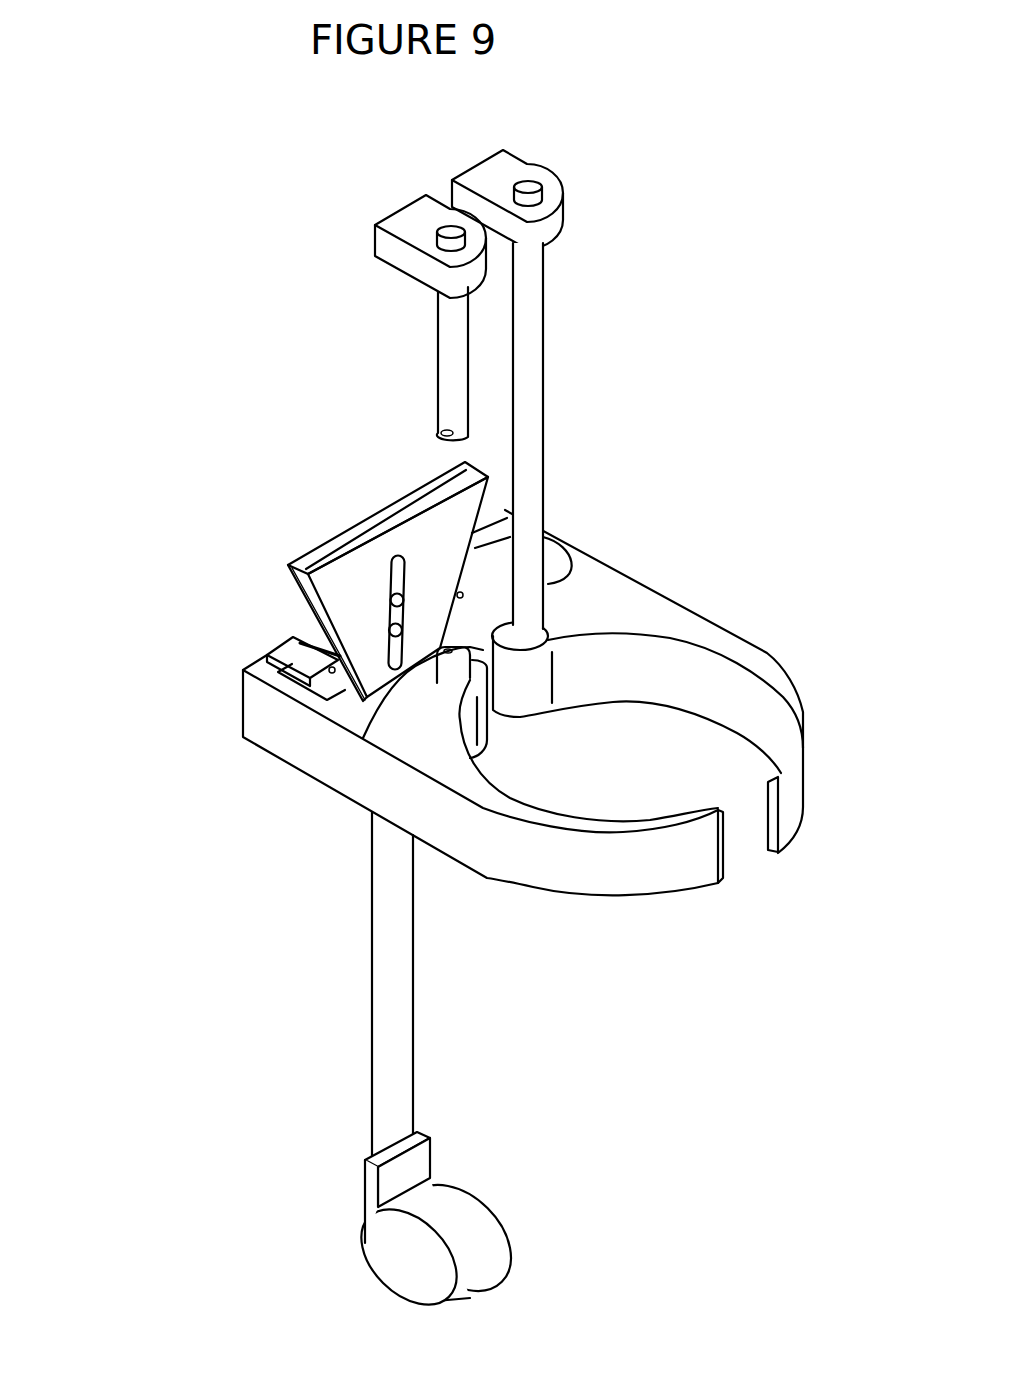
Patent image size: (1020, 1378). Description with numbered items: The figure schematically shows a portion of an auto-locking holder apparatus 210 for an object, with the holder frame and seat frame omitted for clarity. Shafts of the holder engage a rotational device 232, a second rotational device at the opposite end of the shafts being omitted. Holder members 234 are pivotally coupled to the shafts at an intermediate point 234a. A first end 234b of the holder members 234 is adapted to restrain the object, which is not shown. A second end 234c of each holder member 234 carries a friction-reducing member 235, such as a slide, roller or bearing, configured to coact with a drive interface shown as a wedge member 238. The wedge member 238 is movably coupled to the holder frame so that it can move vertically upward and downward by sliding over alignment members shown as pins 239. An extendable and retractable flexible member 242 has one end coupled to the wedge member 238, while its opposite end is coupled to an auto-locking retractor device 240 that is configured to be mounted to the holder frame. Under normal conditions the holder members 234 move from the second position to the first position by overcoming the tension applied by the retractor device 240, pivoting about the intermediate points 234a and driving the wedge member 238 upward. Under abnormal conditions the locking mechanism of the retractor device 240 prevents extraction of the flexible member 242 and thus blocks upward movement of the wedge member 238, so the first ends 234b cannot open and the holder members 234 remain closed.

The auto-locking holder apparatus 210 is at (710, 224).
The rotational device 232 is at (552, 187).
The holder member 234 is at (671, 605).
The intermediate point 234a is at (560, 623).
The first end 234b is at (787, 820).
The second end 234c is at (498, 522).
The friction-reducing member 235 is at (332, 645).
The wedge member 238 is at (348, 583).
The pins 239 is at (405, 605).
The auto-locking retractor device 240 is at (392, 1272).
The flexible member 242 is at (390, 1040).